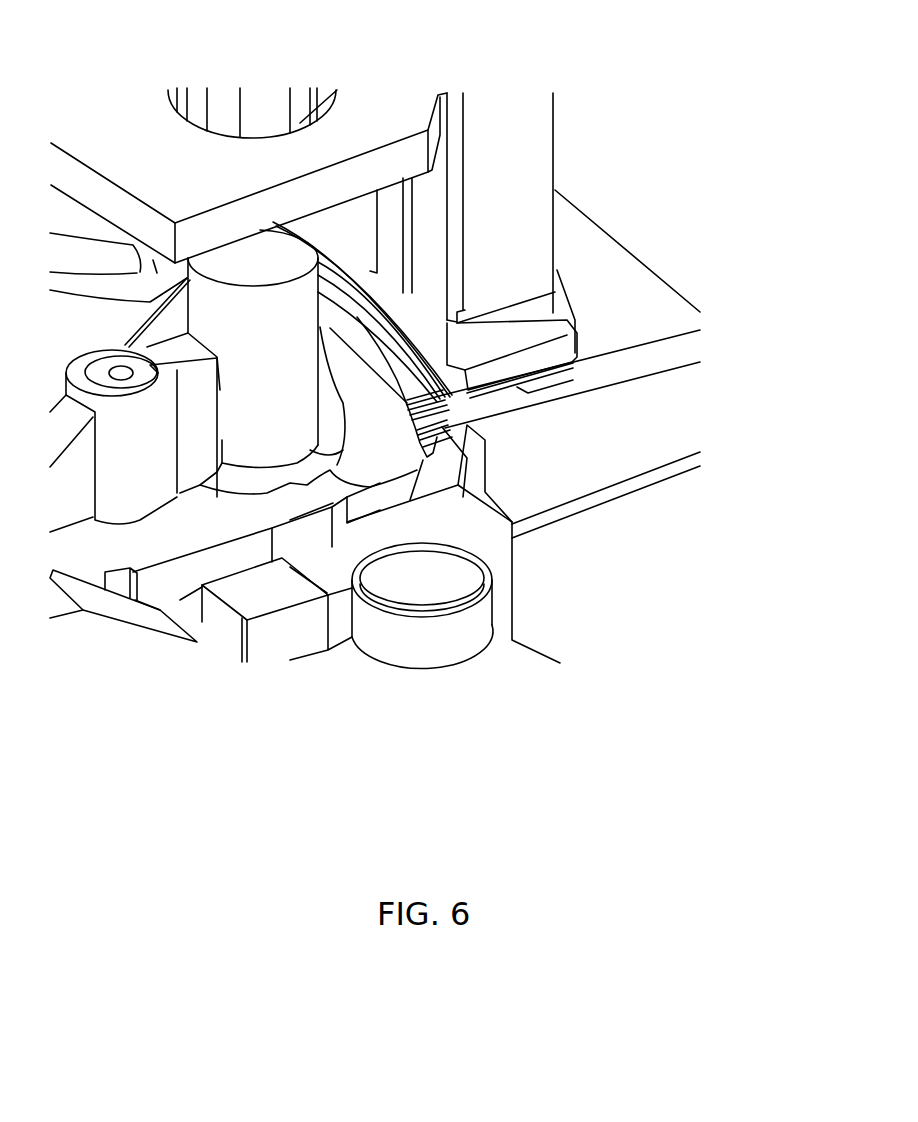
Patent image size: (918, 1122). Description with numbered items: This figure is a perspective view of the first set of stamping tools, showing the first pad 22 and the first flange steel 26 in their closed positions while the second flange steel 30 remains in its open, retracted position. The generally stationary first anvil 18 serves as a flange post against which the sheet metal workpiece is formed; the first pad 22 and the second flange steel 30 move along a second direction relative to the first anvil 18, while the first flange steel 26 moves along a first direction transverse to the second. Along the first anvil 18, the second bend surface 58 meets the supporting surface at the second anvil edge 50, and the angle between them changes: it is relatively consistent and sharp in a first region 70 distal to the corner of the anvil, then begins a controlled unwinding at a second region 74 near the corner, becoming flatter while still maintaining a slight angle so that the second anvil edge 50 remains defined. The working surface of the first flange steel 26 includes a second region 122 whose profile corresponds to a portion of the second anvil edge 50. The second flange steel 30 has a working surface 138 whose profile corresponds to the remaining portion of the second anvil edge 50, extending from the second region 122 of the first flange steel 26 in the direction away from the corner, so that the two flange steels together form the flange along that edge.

The first anvil 18 is at (380, 440).
The first pad 22 is at (512, 202).
The first flange steel 26 is at (613, 428).
The second flange steel 30 is at (438, 190).
The second anvil edge 50 is at (370, 271).
The second bend surface 58 is at (380, 322).
The first region 70 is at (412, 327).
The second region 74 is at (420, 437).
The second region 122 is at (437, 413).
The working surface 138 is at (517, 386).